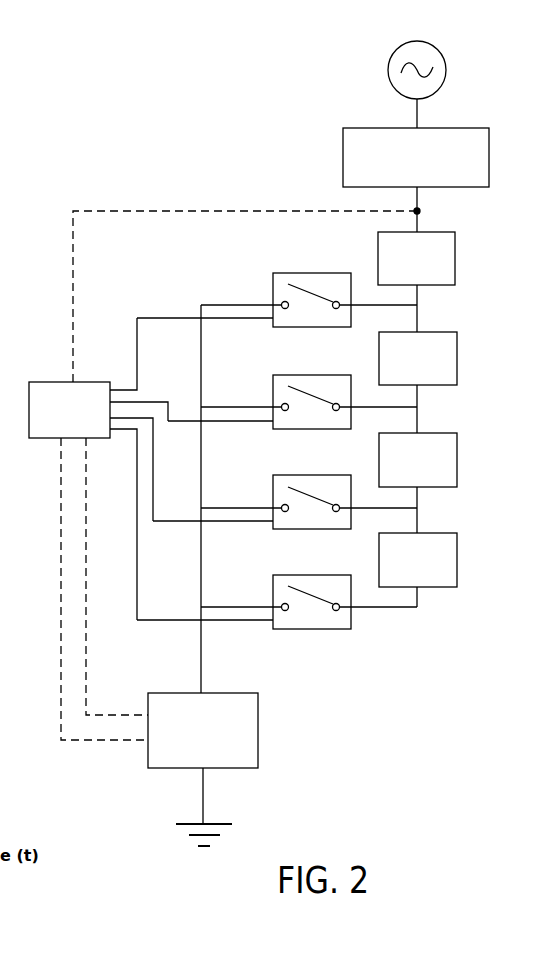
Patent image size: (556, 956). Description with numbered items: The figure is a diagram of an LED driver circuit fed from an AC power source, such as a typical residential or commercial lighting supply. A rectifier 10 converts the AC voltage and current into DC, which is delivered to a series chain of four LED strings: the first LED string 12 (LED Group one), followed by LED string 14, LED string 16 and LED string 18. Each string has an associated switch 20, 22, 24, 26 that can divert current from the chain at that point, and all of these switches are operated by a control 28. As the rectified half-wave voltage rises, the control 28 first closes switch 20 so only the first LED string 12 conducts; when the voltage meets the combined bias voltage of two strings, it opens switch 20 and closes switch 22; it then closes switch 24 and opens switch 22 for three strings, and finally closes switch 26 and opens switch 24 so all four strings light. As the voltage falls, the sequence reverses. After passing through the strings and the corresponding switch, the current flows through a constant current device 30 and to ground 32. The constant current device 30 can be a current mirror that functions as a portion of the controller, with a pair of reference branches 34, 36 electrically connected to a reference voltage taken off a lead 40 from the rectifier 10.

The rectifier 10 is at (480, 128).
The first LED string 12 is at (437, 233).
The LED string 14 is at (442, 332).
The LED string 16 is at (445, 433).
The LED string 18 is at (440, 533).
The switch 20 is at (337, 309).
The switch 22 is at (337, 411).
The switch 24 is at (337, 512).
The switch 26 is at (337, 611).
The control 28 is at (50, 381).
The constant current device 30 is at (168, 692).
The ground 32 is at (215, 822).
The reference branch 34 is at (85, 744).
The reference branch 36 is at (129, 718).
The lead 40 is at (98, 210).